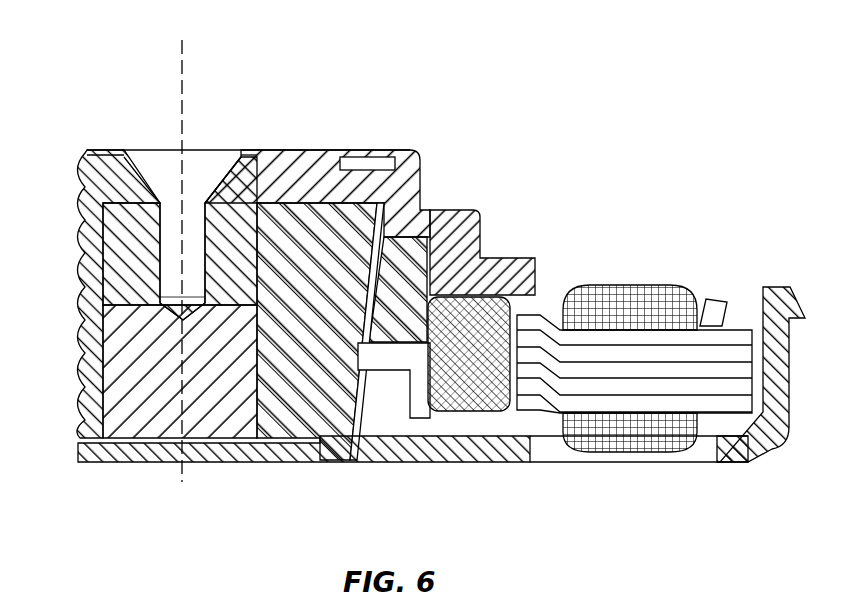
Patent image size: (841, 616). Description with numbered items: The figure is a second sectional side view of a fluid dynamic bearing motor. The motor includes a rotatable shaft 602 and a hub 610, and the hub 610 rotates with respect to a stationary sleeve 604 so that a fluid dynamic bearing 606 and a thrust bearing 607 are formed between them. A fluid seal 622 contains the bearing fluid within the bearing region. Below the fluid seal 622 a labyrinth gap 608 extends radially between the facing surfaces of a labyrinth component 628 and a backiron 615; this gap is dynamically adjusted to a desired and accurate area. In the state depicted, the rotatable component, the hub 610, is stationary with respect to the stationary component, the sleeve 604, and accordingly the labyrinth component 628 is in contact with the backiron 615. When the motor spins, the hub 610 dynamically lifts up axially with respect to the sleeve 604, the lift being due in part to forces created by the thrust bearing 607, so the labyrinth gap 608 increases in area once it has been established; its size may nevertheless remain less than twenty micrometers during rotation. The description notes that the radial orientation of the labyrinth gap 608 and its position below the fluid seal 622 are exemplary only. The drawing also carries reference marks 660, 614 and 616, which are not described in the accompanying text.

The rotatable shaft 602 is at (122, 300).
The central axis 660 is at (180, 75).
The fluid dynamic bearing 606 is at (257, 305).
The stationary sleeve 604 is at (283, 203).
The thrust bearing 607 is at (318, 175).
The fluid seal 622 is at (400, 178).
The hub 610 is at (440, 222).
The labyrinth gap 608 is at (374, 345).
The labyrinth component 628 is at (395, 345).
The backiron 615 is at (430, 435).
The seal block 616 is at (470, 405).
The coil stack 614 is at (628, 340).